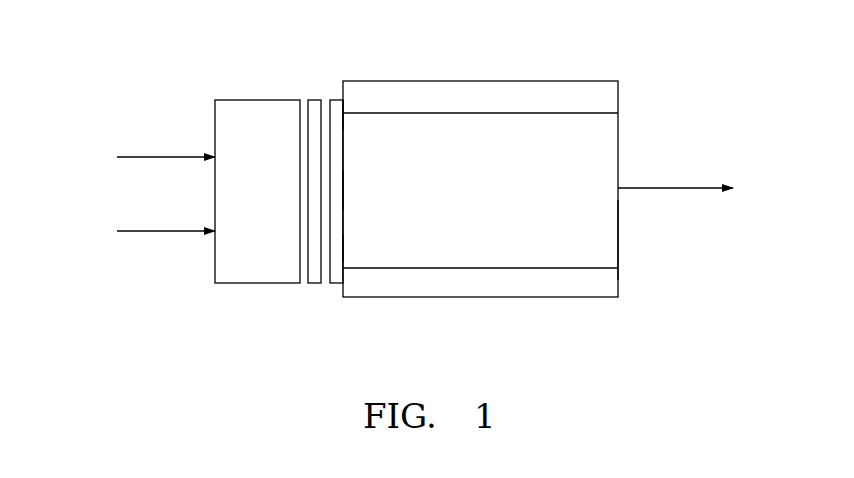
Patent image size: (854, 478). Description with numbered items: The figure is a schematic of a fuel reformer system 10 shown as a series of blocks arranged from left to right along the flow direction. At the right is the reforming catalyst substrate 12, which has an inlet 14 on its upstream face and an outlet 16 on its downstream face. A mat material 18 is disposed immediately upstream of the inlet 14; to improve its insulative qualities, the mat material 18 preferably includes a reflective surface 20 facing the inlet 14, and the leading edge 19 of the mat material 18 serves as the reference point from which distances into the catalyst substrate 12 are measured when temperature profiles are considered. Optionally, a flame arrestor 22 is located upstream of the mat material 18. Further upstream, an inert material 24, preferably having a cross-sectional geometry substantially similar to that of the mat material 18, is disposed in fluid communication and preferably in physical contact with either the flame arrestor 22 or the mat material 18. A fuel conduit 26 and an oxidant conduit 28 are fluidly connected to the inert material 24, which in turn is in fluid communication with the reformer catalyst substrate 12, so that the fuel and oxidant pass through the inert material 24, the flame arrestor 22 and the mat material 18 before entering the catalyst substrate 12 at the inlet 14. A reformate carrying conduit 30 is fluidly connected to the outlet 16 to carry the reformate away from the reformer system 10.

The reformer system 10 is at (551, 80).
The reforming catalyst substrate 12 is at (603, 134).
The inlet 14 is at (356, 188).
The outlet 16 is at (618, 230).
The mat material 18 is at (338, 98).
The leading edge 19 is at (349, 118).
The reflective surface 20 is at (330, 260).
The flame arrestor 22 is at (317, 284).
The inert material 24 is at (243, 100).
The fuel conduit 26 is at (143, 157).
The oxidant conduit 28 is at (143, 231).
The reformate carrying conduit 30 is at (670, 188).